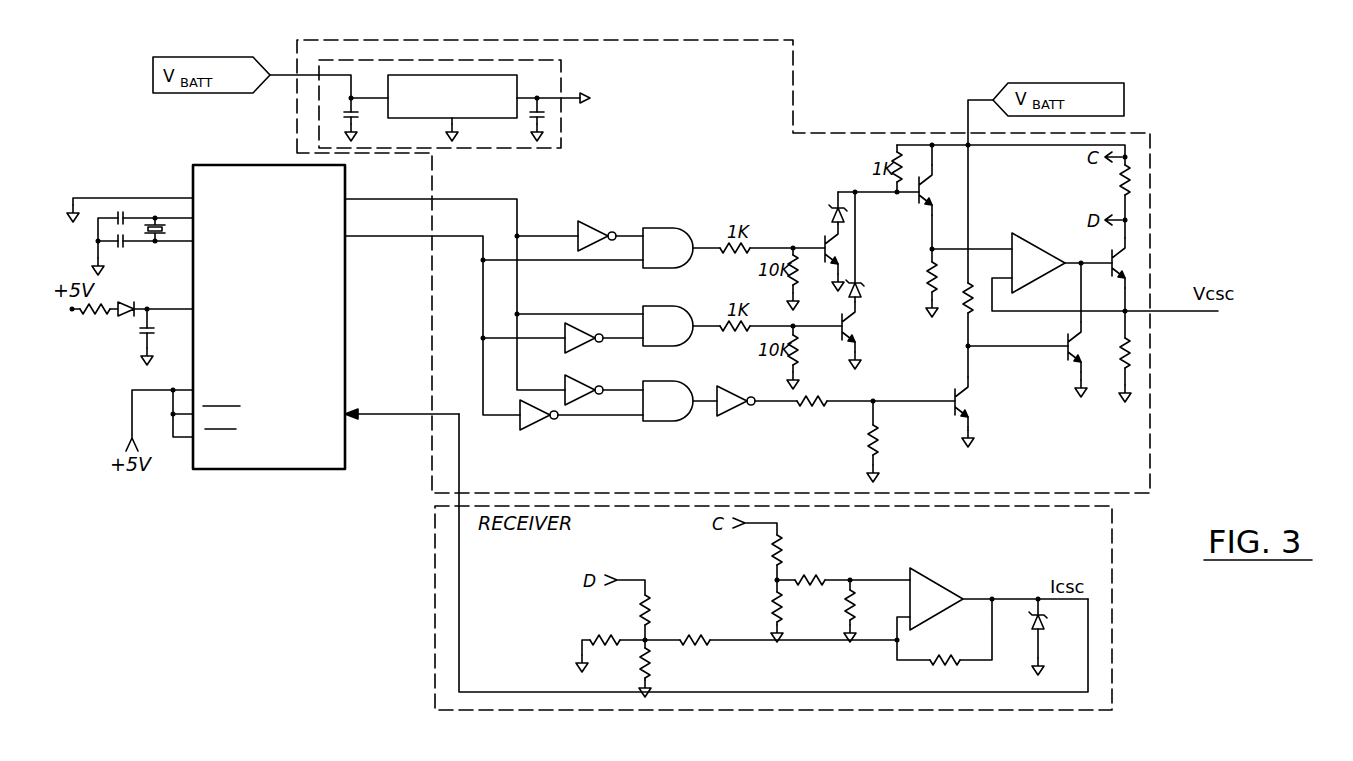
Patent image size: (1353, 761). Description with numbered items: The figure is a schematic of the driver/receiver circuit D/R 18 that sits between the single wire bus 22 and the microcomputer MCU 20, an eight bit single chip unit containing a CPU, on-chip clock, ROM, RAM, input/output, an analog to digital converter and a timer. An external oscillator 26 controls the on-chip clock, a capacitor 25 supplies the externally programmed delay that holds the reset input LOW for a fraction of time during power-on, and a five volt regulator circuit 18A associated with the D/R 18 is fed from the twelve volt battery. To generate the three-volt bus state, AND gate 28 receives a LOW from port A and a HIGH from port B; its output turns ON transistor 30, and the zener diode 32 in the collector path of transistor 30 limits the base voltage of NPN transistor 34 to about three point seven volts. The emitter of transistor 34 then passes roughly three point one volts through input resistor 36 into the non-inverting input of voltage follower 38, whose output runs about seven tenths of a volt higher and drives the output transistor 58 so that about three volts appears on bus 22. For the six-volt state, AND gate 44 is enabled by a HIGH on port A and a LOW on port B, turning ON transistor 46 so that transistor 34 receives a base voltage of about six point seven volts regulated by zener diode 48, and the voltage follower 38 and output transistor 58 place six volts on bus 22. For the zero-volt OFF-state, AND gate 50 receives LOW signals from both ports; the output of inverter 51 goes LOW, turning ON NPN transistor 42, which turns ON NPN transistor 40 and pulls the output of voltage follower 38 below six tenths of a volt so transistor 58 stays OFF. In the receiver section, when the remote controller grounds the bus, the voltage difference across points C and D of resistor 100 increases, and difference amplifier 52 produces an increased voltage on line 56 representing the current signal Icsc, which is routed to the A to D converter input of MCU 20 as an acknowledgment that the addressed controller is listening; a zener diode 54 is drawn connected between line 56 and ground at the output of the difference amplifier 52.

The driver/receiver (D/R) circuit 18 is at (838, 133).
The 5 volt regulator circuit 18A is at (520, 59).
The MCU 20 is at (233, 165).
The bus 22 is at (1045, 312).
The capacitor 25 is at (140, 334).
The external oscillator 26 is at (147, 238).
The AND gate 28 is at (662, 232).
The transistor 30 is at (842, 249).
The 3.7 volt zener diode 32 is at (834, 207).
The NPN transistor 34 is at (919, 205).
The input resistor 36 is at (924, 285).
The voltage follower 38 is at (1043, 258).
The NPN transistor 40 is at (1064, 352).
The NPN transistor 42 is at (970, 400).
The AND gate 44 is at (662, 310).
The transistor 46 is at (850, 328).
The zener diode 48 is at (862, 298).
The AND gate 50 is at (670, 385).
The inverter 51 is at (738, 396).
The difference amplifier 52 is at (909, 572).
The zener diode 54 is at (1055, 637).
The line 56 is at (1020, 597).
The transistor 58 is at (1132, 254).
The resistor 100 is at (1101, 188).